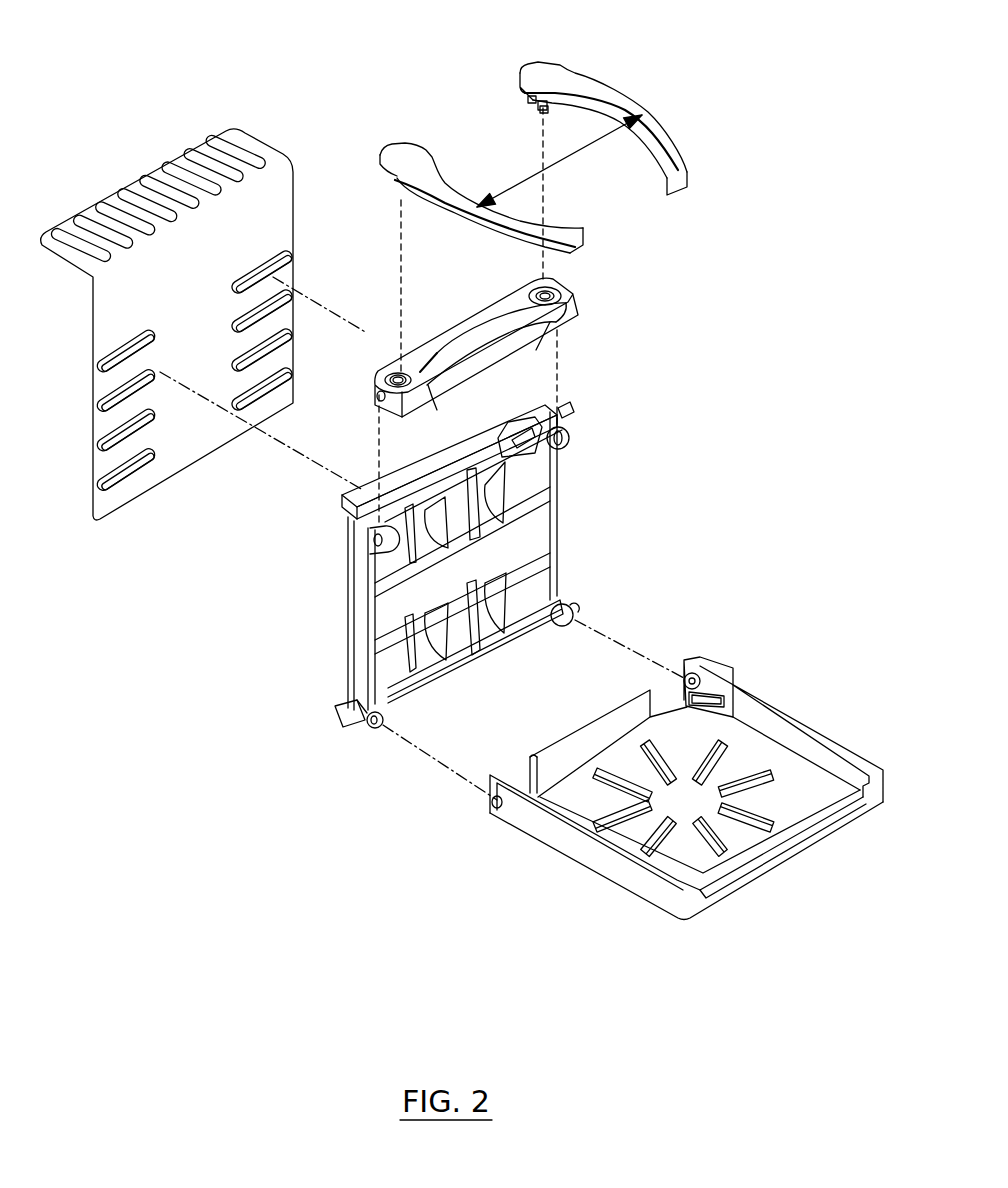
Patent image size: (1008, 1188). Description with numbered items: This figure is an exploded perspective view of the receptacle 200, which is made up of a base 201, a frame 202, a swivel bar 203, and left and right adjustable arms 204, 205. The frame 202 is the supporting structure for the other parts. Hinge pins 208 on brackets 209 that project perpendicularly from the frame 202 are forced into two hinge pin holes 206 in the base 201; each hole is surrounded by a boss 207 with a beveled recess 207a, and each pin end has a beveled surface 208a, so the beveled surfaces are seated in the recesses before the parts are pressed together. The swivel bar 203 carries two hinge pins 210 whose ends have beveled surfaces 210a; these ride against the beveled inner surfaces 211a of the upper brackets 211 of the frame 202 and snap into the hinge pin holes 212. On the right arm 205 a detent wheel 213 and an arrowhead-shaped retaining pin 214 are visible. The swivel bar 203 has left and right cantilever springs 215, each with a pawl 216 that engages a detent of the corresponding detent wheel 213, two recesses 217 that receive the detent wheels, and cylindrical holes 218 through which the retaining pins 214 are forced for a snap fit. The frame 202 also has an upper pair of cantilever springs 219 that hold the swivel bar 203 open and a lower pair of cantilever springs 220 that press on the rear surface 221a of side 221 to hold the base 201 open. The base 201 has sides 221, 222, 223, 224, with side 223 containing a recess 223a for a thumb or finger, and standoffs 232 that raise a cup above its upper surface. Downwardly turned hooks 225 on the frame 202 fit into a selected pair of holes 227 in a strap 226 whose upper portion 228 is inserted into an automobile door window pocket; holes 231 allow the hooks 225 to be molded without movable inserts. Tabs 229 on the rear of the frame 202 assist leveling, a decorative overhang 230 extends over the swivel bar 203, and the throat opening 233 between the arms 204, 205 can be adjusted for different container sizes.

The receptacle 200 is at (310, 865).
The base 201 is at (715, 754).
The frame 202 is at (540, 542).
The swivel bar 203 is at (570, 285).
The left adjustable arm 204 is at (432, 187).
The right adjustable arm 205 is at (578, 80).
The hinge pin holes 206 is at (684, 688).
The boss 207 is at (708, 700).
The beveled recess 207a is at (698, 675).
The hinge pins 208 is at (368, 713).
The beveled surface 208a is at (372, 728).
The brackets 209 is at (390, 708).
The hinge pins 210 is at (378, 378).
The beveled surface 210a is at (382, 402).
The upper brackets 211 is at (378, 550).
The beveled inner surfaces 211a is at (572, 438).
The hinge pin hole 212 is at (372, 537).
The detent wheel 213 is at (530, 99).
The retaining pin 214 is at (543, 110).
The cantilever springs 215 is at (437, 380).
The pawl 216 is at (565, 322).
The recesses 217 is at (528, 284).
The cylindrical holes 218 is at (535, 292).
The upper pair of cantilever springs 219 is at (428, 520).
The lower pair of cantilever springs 220 is at (478, 640).
The side 221 is at (567, 750).
The rear surface 221a is at (545, 752).
The side 222 is at (778, 713).
The side 223 is at (725, 895).
The recess 223a is at (770, 860).
The side 224 is at (570, 840).
The hooks 225 is at (488, 418).
The strap 226 is at (160, 322).
The holes 227 is at (267, 400).
The upper portion 228 is at (148, 188).
The tabs 229 is at (348, 722).
The overhang 230 is at (565, 412).
The holes 231 is at (543, 446).
The standoffs 232 is at (750, 786).
The throat opening 233 is at (548, 170).